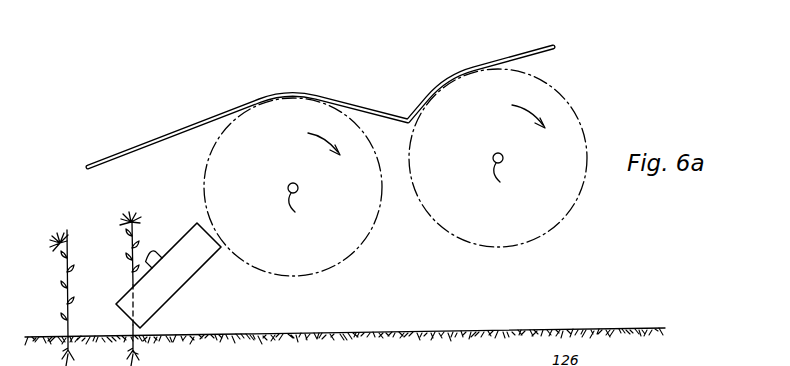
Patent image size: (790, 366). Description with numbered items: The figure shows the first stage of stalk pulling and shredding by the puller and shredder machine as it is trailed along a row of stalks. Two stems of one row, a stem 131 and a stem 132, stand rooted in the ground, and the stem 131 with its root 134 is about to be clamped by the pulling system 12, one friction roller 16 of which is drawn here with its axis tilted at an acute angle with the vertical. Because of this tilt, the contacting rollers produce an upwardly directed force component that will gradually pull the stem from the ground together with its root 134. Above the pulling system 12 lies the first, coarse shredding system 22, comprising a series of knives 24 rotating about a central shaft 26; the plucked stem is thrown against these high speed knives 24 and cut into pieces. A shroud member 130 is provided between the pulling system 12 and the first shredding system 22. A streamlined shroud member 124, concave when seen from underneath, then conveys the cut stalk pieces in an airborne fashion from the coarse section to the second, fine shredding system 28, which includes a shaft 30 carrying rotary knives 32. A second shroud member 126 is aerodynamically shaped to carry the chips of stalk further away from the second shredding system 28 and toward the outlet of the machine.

The pulling system 12 is at (147, 193).
The friction roller 16 is at (165, 300).
The first coarse shredding system 22 is at (252, 92).
The knives 24 is at (328, 266).
The central shaft 26 is at (302, 197).
The second fine shredding system 28 is at (477, 50).
The shaft 30 is at (507, 167).
The rotary knives 32 is at (538, 236).
The shroud member 124 is at (370, 101).
The second shroud member 126 is at (527, 47).
The shroud member 130 is at (131, 146).
The stem 131 is at (132, 262).
The stem 132 is at (67, 268).
The root 134 is at (118, 351).